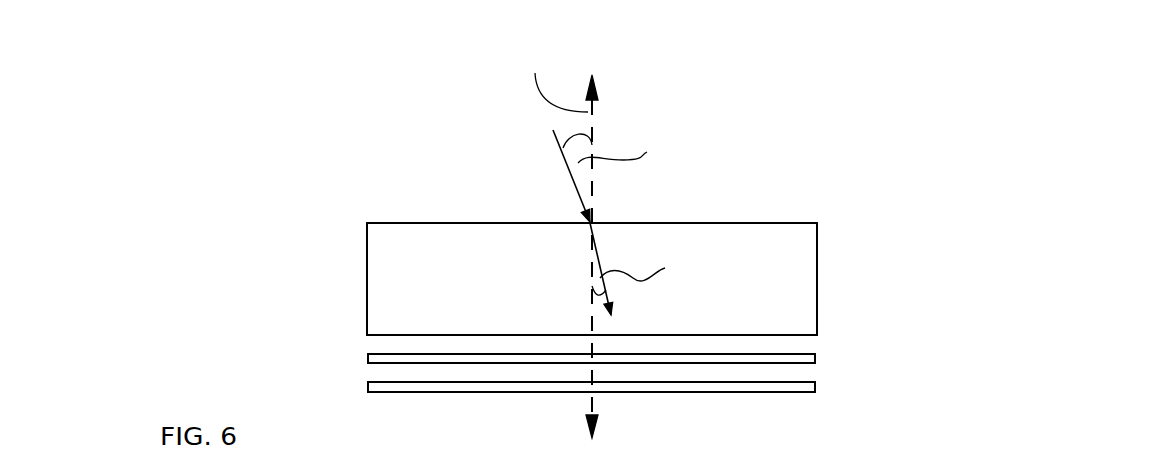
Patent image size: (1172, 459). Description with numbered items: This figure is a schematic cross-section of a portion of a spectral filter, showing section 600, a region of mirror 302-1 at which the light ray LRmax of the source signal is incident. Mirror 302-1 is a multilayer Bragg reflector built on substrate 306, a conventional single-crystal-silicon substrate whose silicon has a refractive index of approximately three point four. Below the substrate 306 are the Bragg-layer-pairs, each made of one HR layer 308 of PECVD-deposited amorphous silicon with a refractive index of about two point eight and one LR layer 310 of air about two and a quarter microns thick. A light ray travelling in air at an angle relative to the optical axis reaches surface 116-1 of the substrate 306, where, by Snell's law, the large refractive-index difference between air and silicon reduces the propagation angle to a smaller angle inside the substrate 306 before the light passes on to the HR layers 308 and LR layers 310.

The section 600 is at (200, 125).
The mirror 302-1 is at (283, 248).
The surface 116-1 is at (751, 210).
The substrate 306 is at (817, 280).
The high-refractive-index (HR) layer 308 is at (367, 360).
The low-refractive-index (LR) layer 310 is at (803, 373).